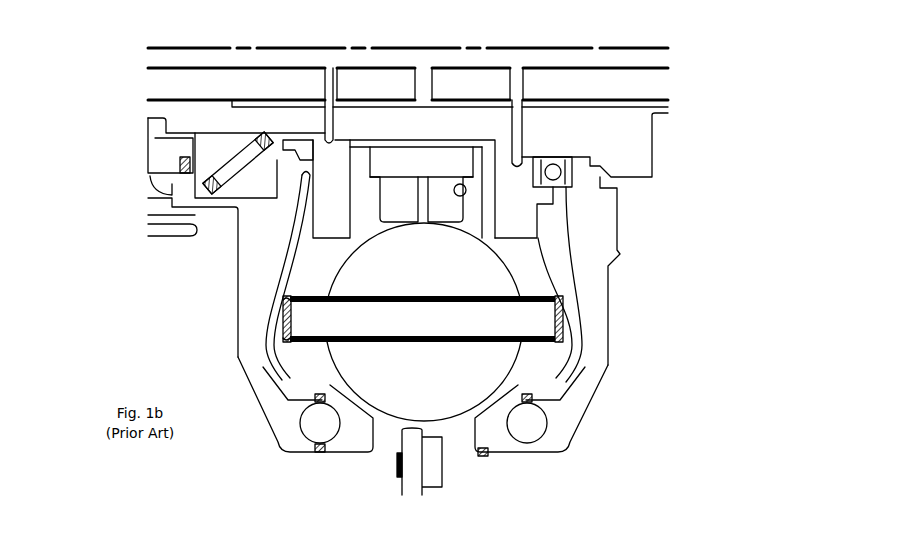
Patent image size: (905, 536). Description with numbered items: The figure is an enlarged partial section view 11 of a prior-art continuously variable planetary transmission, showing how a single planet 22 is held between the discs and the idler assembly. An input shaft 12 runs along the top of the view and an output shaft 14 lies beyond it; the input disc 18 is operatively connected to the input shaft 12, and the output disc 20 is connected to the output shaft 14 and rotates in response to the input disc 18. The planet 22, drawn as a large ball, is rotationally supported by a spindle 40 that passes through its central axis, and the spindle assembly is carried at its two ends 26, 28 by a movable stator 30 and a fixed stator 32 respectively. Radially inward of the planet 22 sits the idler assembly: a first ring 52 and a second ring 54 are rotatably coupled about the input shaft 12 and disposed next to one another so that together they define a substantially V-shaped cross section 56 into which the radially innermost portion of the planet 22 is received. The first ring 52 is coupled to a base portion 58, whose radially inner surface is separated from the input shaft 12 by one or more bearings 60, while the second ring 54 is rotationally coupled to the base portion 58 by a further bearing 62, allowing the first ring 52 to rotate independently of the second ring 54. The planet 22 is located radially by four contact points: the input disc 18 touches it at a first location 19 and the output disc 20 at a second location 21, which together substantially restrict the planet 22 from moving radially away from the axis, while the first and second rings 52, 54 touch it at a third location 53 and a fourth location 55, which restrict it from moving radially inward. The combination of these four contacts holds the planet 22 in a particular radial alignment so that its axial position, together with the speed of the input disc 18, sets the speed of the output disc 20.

The partial section view 11 is at (46, 121).
The input shaft 12 is at (415, 126).
The output shaft 14 is at (580, 136).
The input disc 18 is at (257, 230).
The first location 19 is at (361, 386).
The output disc 20 is at (580, 226).
The second location 21 is at (487, 386).
The planet 22 is at (415, 276).
The end of spindle assembly 26 is at (323, 307).
The end of spindle assembly 28 is at (520, 347).
The movable stator 30 is at (322, 211).
The fixed stator 32 is at (509, 211).
The spindle 40 is at (415, 328).
The first ring 52 is at (390, 211).
The third location 53 is at (403, 232).
The second ring 54 is at (436, 211).
The fourth location 55 is at (425, 233).
The V-shaped cross section 56 is at (442, 233).
The base portion 58 is at (415, 170).
The bearing 60 is at (393, 138).
The bearing 62 is at (468, 190).